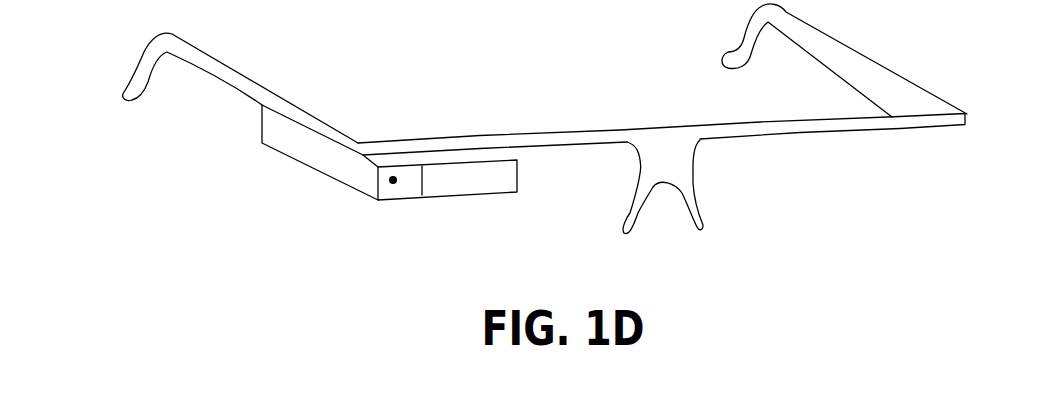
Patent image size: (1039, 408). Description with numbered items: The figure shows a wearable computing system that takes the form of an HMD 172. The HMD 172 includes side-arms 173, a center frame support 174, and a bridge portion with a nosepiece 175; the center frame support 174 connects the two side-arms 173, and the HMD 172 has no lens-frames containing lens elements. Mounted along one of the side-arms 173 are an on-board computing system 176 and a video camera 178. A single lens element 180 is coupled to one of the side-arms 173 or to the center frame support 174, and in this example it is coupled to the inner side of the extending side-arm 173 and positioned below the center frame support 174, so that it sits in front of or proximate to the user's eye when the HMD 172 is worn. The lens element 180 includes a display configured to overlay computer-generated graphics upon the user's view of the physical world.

The HMD 172 is at (579, 119).
The side-arms 173 is at (223, 77).
The center frame support 174 is at (562, 137).
The nosepiece 175 is at (687, 178).
The on-board computing system 176 is at (298, 160).
The video camera 178 is at (392, 183).
The single lens element 180 is at (473, 198).